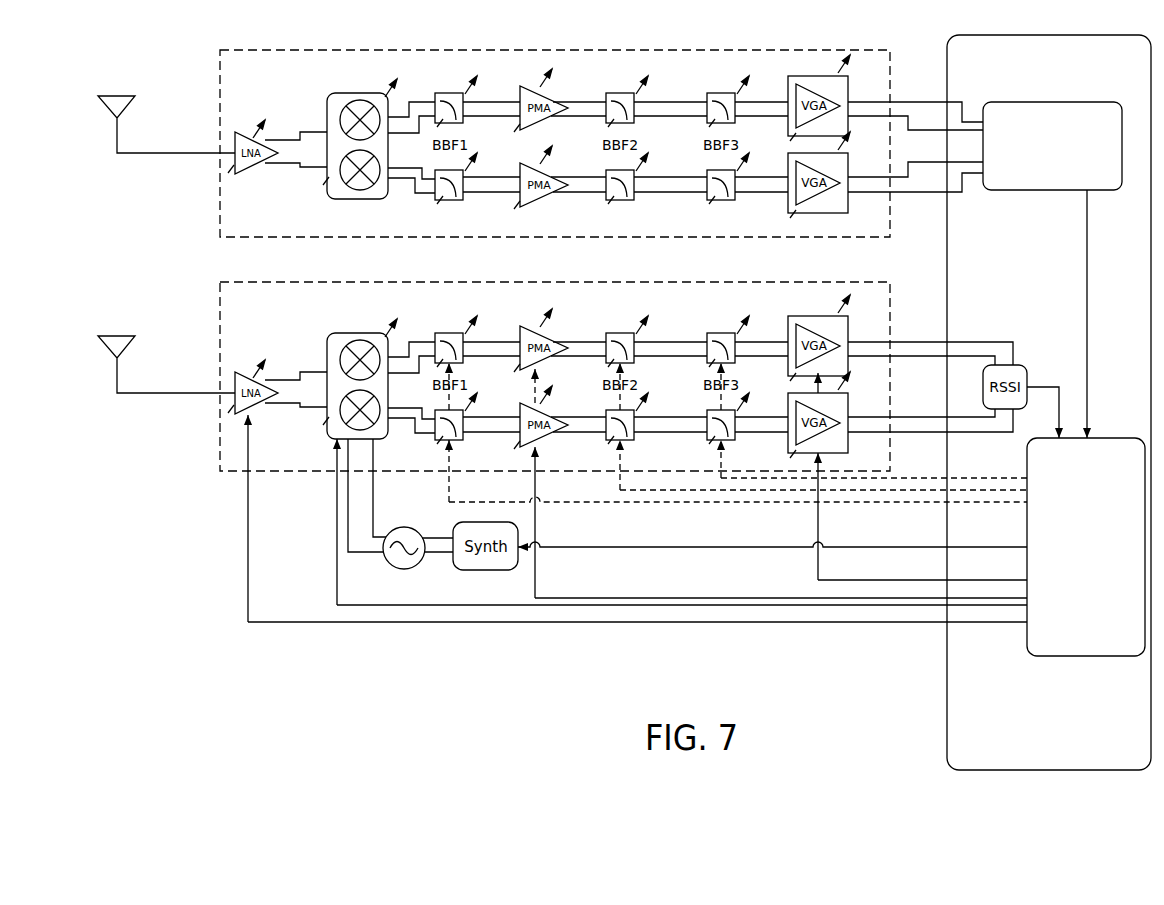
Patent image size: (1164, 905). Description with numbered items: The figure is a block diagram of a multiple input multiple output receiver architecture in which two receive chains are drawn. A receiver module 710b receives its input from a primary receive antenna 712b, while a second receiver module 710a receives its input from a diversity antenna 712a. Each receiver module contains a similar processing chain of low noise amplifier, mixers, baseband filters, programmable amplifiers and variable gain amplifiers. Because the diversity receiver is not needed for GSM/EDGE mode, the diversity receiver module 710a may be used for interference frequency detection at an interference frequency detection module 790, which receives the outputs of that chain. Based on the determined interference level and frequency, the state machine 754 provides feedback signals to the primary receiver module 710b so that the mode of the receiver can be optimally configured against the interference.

The diversity antenna 712a is at (103, 94).
The primary receive antenna 712b is at (103, 334).
The receiver module 710a is at (289, 50).
The receiver module 710b is at (219, 438).
The interference frequency detection module 790 is at (1079, 102).
The state machine 754 is at (1072, 579).